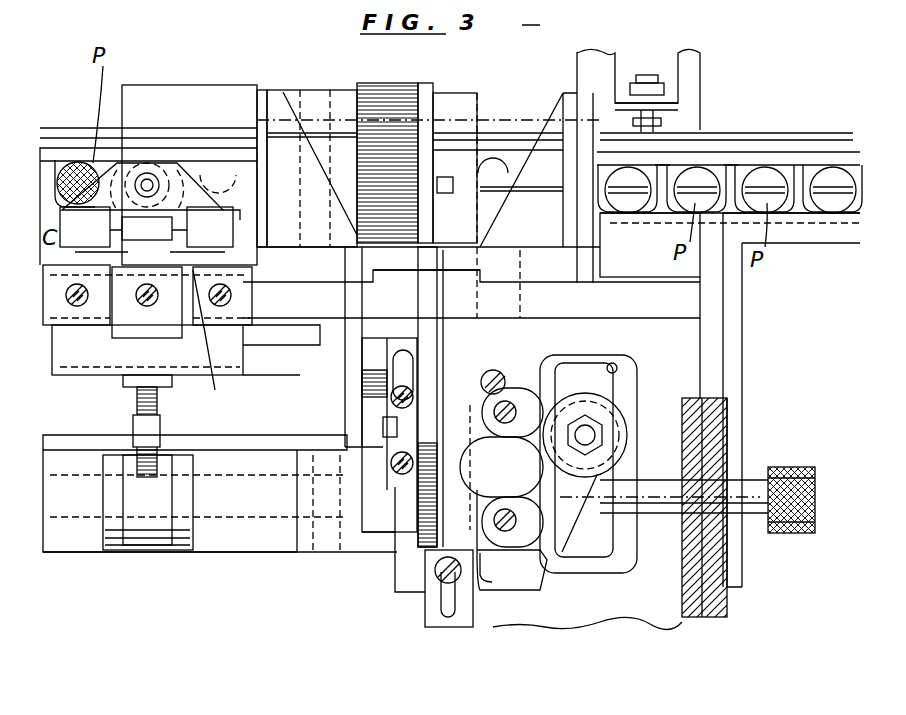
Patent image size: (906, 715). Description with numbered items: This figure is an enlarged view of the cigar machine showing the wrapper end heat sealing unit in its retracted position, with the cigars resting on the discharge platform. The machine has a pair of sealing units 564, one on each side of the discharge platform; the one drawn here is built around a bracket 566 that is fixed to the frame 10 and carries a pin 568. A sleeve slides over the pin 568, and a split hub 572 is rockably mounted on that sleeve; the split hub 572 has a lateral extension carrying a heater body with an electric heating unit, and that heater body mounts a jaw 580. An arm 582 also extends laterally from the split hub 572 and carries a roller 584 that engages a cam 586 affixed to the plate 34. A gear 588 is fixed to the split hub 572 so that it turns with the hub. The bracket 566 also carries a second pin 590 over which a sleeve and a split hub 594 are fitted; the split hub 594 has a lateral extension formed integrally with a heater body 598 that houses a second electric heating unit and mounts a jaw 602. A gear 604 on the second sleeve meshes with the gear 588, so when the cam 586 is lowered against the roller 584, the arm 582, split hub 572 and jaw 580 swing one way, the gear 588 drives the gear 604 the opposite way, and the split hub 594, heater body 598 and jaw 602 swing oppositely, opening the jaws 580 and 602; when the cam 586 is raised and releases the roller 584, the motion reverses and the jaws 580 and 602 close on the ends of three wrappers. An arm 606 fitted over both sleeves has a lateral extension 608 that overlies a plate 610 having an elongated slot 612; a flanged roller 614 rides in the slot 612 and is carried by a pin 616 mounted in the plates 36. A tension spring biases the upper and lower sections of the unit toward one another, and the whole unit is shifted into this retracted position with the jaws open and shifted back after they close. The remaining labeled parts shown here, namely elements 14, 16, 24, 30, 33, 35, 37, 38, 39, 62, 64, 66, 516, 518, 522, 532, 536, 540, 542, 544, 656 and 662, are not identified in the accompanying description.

The frame 10 is at (663, 593).
The bracket 14 is at (657, 218).
The support plate 16 is at (280, 348).
The guide rail seat 24 is at (665, 165).
The base 30 is at (72, 538).
The rollers 33 is at (100, 153).
The plate 34 is at (462, 617).
The lower rail 35 is at (67, 138).
The plates 36 is at (407, 575).
The upper rail 37 is at (50, 130).
The hidden member 38 is at (335, 545).
The mounting bracket 39 is at (663, 108).
The shaft 62 is at (747, 480).
The slots 64 is at (318, 563).
The knurled knob 66 is at (797, 477).
The support 516 is at (209, 346).
The base plate 518 is at (113, 466).
The adjusting screw 522 is at (140, 425).
The cross member 532 is at (150, 254).
The side blocks 536 is at (146, 227).
The cam 540 is at (180, 165).
The center block 542 is at (148, 229).
The pivot bolt 544 is at (150, 180).
The sealing unit 564 is at (456, 73).
The bracket 566 is at (507, 265).
The pin 568 is at (483, 228).
The split hub 572 is at (371, 320).
The jaw 580 is at (211, 215).
The arm 582 is at (325, 332).
The roller 584 is at (373, 415).
The cam 586 is at (375, 345).
The gear 588 is at (400, 232).
The pin 590 is at (507, 130).
The split hub 594 is at (328, 112).
The heater body 598 is at (165, 95).
The jaw 602 is at (221, 168).
The gear 604 is at (390, 92).
The arm 606 is at (430, 357).
The lateral extension 608 is at (492, 575).
The plate 610 is at (570, 362).
The elongated slot 612 is at (614, 365).
The flanged roller 614 is at (622, 428).
The pin 616 is at (590, 437).
The angle bar 656 is at (807, 217).
The upright 662 is at (702, 367).